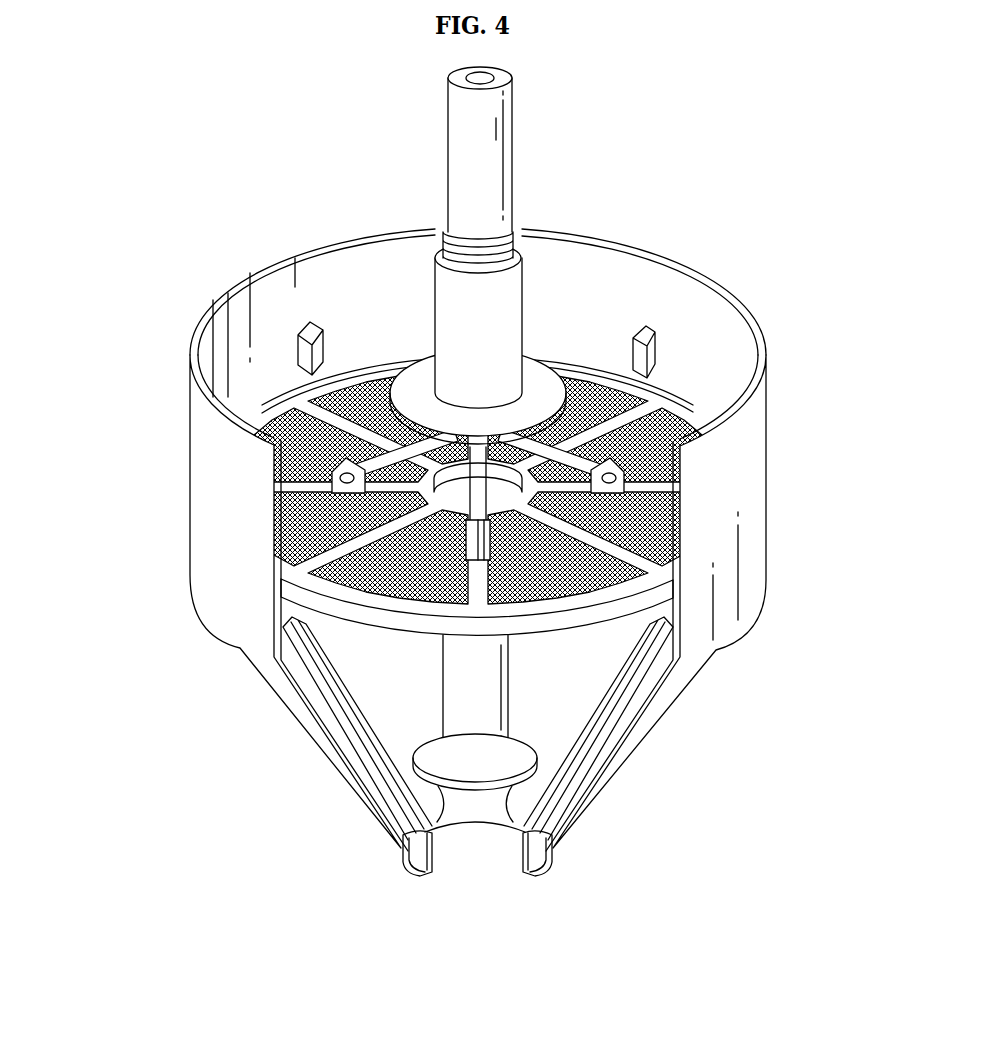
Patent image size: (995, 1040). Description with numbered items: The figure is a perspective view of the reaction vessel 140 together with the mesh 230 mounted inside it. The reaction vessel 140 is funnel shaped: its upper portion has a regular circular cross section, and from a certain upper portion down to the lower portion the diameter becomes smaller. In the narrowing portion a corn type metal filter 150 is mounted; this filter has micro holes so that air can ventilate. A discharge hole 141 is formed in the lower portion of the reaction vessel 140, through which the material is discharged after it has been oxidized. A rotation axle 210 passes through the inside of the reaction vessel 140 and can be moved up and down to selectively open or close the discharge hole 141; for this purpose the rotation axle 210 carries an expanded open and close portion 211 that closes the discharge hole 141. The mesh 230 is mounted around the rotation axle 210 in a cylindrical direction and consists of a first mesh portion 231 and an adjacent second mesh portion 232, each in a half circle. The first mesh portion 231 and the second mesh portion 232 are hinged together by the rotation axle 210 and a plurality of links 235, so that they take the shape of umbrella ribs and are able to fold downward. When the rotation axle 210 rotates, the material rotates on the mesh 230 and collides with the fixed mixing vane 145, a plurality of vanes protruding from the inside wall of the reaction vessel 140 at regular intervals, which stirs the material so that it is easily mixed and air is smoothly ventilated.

The reaction vessel 140 is at (205, 517).
The discharge hole 141 is at (488, 862).
The fixed mixing vane 145 is at (652, 330).
The corn type metal filter 150 is at (327, 681).
The rotation axle 210 is at (457, 142).
The open and close portion 211 is at (517, 750).
The mesh 230 is at (366, 355).
The first mesh portion 231 is at (672, 408).
The second mesh portion 232 is at (258, 401).
The links 235 is at (655, 423).